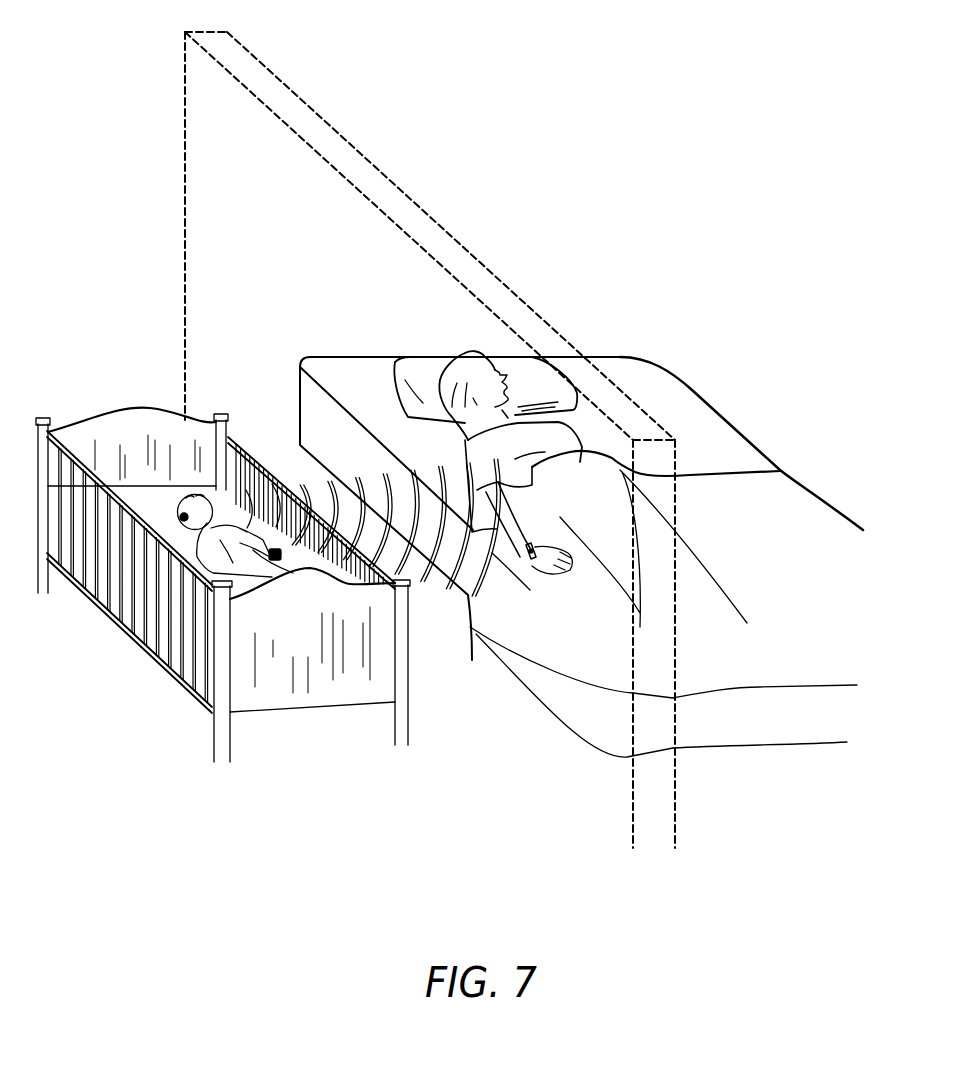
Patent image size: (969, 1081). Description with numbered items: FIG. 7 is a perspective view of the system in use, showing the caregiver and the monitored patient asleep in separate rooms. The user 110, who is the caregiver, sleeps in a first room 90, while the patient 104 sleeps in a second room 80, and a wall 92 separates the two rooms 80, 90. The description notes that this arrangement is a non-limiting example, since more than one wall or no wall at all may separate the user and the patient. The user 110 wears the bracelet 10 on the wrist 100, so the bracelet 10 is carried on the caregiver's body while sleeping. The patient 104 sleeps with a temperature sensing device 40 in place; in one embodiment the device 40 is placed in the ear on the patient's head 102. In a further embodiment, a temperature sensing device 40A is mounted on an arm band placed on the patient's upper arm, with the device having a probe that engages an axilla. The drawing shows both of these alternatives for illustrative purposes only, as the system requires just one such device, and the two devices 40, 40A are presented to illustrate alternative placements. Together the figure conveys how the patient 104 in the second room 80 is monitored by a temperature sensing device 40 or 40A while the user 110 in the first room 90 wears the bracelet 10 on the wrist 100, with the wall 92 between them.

The second room 80 is at (129, 195).
The wall 92 is at (259, 178).
The first room 90 is at (570, 151).
The patient's head 102 is at (188, 494).
The patient 104 is at (232, 584).
The temperature sensing device 40 is at (177, 504).
The temperature sensing device 40A is at (240, 565).
The user 110 is at (467, 442).
The wrist 100 is at (532, 573).
The bracelet 10 is at (543, 530).